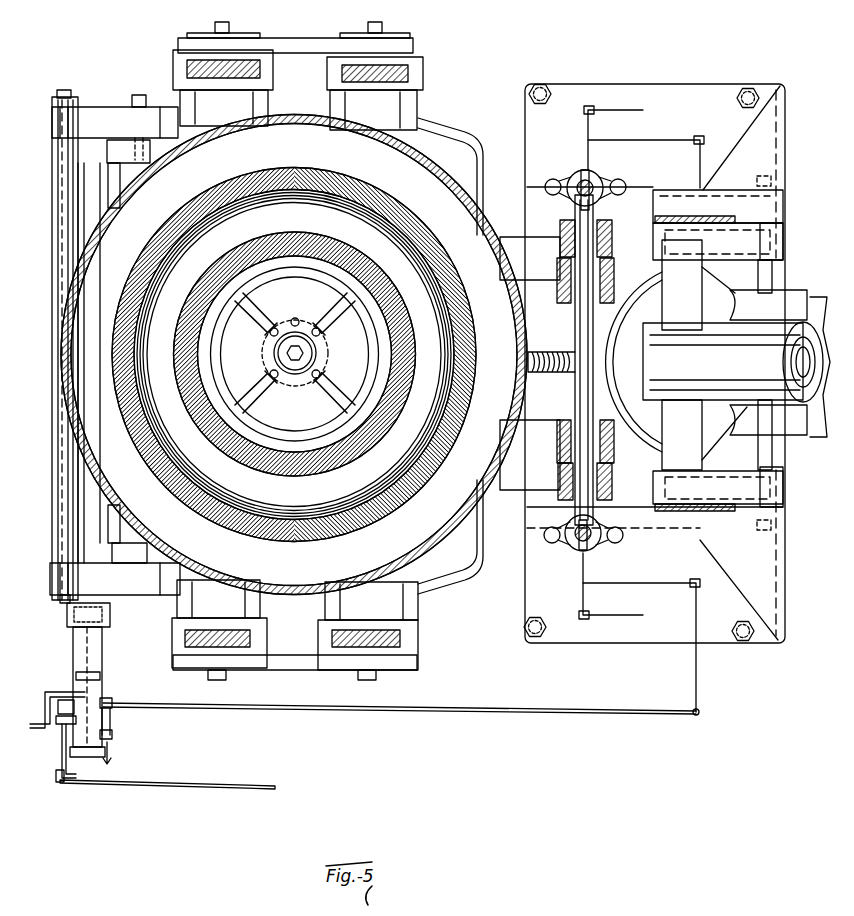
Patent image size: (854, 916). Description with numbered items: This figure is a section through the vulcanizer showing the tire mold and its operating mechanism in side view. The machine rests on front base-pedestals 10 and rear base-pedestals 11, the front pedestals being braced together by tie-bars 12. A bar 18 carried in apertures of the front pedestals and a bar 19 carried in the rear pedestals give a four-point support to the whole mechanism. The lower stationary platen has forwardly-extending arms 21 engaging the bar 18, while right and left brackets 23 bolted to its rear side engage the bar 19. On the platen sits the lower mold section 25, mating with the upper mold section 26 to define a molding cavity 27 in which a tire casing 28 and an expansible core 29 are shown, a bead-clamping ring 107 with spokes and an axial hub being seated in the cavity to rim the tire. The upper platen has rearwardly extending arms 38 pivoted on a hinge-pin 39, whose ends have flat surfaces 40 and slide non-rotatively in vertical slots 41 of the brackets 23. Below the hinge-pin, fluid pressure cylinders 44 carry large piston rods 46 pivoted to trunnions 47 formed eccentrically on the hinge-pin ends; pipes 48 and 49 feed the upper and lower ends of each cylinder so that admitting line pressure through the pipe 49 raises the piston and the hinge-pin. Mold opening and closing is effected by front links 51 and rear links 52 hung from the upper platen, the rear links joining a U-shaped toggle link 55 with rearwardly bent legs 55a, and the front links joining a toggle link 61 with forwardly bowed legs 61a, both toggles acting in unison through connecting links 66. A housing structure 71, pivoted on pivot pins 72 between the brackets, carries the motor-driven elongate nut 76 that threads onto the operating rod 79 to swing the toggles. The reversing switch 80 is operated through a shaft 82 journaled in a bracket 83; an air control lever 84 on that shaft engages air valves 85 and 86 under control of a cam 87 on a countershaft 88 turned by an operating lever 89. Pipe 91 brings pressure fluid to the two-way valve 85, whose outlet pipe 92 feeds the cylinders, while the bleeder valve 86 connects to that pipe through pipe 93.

The base-pedestal 10 is at (100, 118).
The base-pedestal 11 is at (710, 88).
The tie-bar 12 is at (72, 522).
The bar 18 is at (140, 94).
The bar 19 is at (772, 452).
The forwardly-extending arm 21 is at (116, 152).
The bracket 23 is at (740, 240).
The lower mold section 25 is at (470, 238).
The upper mold section 26 is at (480, 485).
The molding cavity 27 is at (186, 488).
The tire casing 28 is at (455, 420).
The expansible core 29 is at (425, 462).
The arm 38 is at (560, 304).
The hinge-pin 39 is at (574, 402).
The flat surface 40 is at (598, 240).
The vertical slot 41 is at (598, 216).
The fluid pressure operated cylinder 44 is at (570, 176).
The piston rod 46 is at (577, 186).
The trunnion 47 is at (590, 180).
The fluid inlet and outlet pipe 48 is at (626, 108).
The fluid inlet and outlet pipe 49 is at (670, 145).
The link 51 is at (190, 62).
The link 52 is at (408, 72).
The toggle link 55 is at (400, 112).
The leg 55a is at (460, 130).
The toggle link 61 is at (250, 608).
The leg 61a is at (110, 184).
The connecting link 66 is at (310, 40).
The housing structure 71 is at (770, 330).
The pivot pin 72 is at (690, 224).
The elongate nut 76 is at (806, 330).
The operating rod 79 is at (554, 338).
The reversing switch 80 is at (108, 620).
The shaft 82 is at (72, 650).
The bracket 83 is at (102, 660).
The air control lever 84 is at (82, 785).
The air valve 85 is at (64, 732).
The air valve 86 is at (113, 740).
The cam 87 is at (92, 768).
The countershaft 88 is at (102, 678).
The operating lever 89 is at (50, 692).
The pipe 91 is at (166, 786).
The pipe 92 is at (212, 710).
The pipe 93 is at (113, 718).
The bead-clamping ring 107 is at (296, 440).